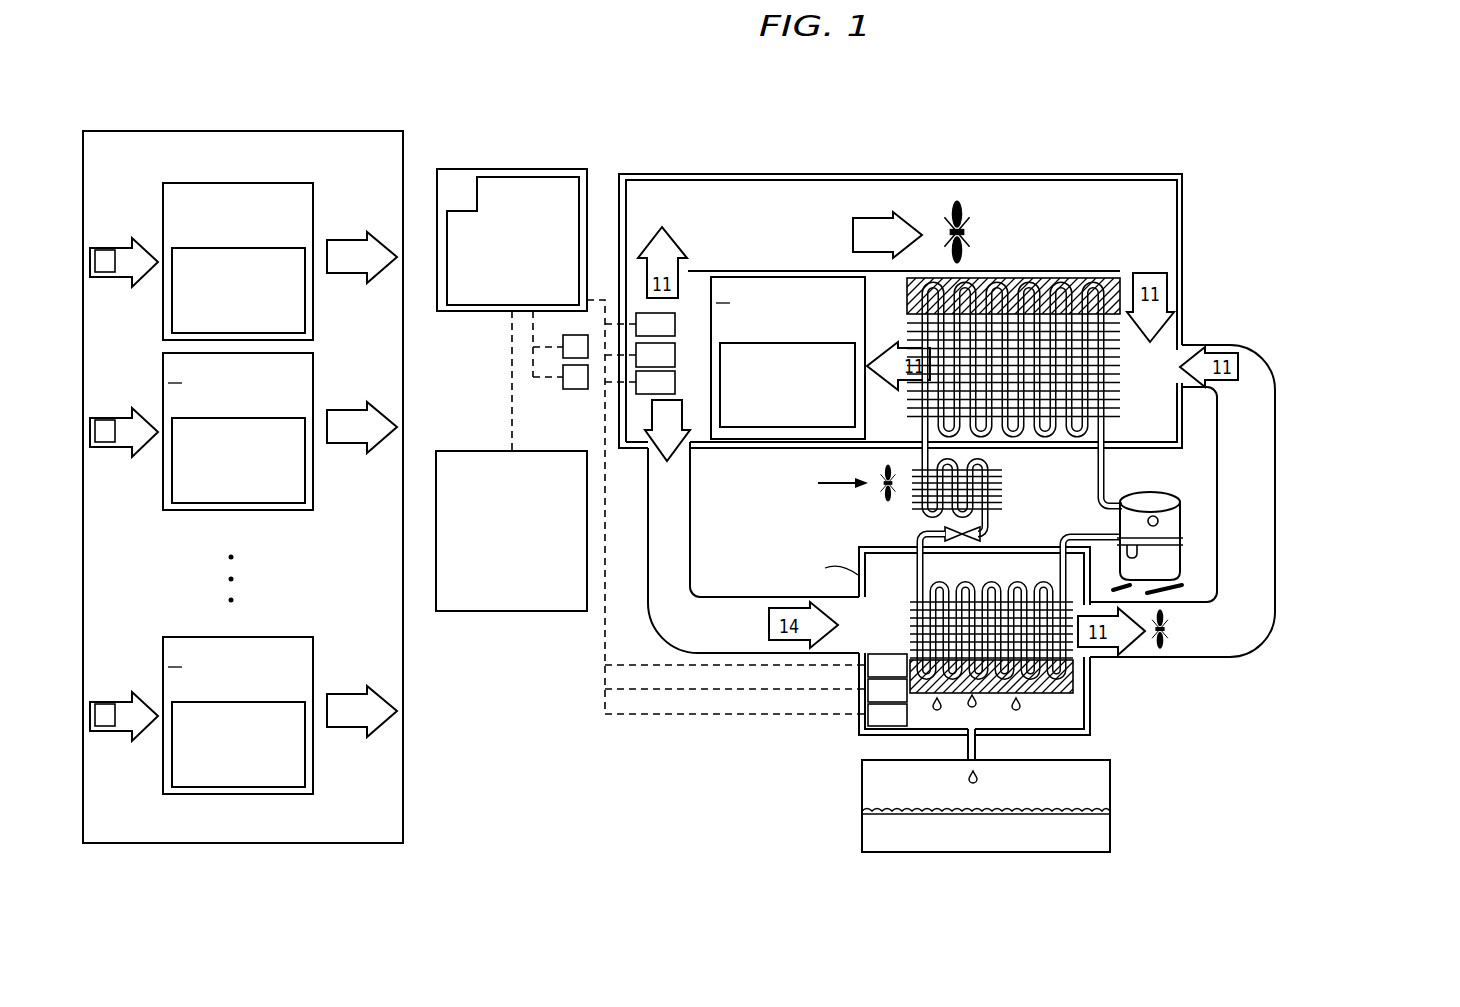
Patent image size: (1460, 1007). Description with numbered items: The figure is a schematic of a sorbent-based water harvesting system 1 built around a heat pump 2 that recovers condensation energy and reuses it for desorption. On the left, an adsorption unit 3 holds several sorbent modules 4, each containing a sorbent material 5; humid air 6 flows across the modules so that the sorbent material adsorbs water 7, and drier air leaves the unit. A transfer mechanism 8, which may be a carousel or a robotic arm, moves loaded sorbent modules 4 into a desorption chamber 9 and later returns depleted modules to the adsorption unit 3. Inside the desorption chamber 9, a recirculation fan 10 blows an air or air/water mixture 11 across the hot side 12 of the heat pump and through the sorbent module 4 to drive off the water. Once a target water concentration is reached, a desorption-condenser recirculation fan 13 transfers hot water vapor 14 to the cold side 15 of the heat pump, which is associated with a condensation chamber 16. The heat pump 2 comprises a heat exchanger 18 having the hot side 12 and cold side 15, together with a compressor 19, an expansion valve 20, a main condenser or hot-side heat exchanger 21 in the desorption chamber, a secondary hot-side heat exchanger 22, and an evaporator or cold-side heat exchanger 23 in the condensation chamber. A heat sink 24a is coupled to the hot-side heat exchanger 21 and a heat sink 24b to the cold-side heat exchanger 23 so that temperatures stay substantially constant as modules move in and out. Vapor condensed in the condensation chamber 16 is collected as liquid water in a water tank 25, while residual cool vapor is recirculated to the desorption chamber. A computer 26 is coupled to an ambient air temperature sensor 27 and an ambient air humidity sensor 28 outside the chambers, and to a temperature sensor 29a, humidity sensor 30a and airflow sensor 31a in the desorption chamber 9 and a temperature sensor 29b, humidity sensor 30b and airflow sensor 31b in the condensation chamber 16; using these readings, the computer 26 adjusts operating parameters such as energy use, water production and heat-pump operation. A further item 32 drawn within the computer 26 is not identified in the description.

The sorbent-based water harvesting system 1 is at (1230, 103).
The heat pump 2 is at (1418, 135).
The adsorption unit 3 is at (356, 166).
The sorbent module 4 is at (168, 213).
The sorbent material 5 is at (238, 290).
The air 6 is at (362, 257).
The water 7 is at (1102, 833).
The transfer mechanism 8 is at (511, 531).
The desorption chamber 9 is at (633, 212).
The recirculation fan 10 is at (965, 225).
The air or air/water mixture 11 is at (887, 235).
The hot side 12 is at (1305, 168).
The desorption-condenser recirculation fan 13 is at (1170, 627).
The hot water vapor 14 is at (752, 526).
The cold side 15 is at (1305, 610).
The condensation chamber 16 is at (873, 587).
The heat exchanger 18 is at (1357, 168).
The compressor 19 is at (1150, 578).
The expansion valve 20 is at (984, 536).
The hot-side heat exchanger 21 is at (1019, 374).
The secondary hot-side heat exchanger 22 is at (1000, 490).
The cold-side heat exchanger 23 is at (1008, 617).
The heat sink 24a is at (1110, 278).
The heat sink 24b is at (1073, 680).
The water tank 25 is at (872, 790).
The computer 26 is at (519, 220).
The ambient air temperature sensor 27 is at (575, 346).
The ambient air humidity sensor 28 is at (575, 377).
The temperature sensor 29a is at (655, 324).
The humidity sensor 30a is at (655, 355).
The airflow sensor 31a is at (655, 382).
The temperature sensor 29b is at (887, 665).
The humidity sensor 30b is at (887, 690).
The airflow sensor 31b is at (887, 715).
The processor/memory 32 is at (489, 204).